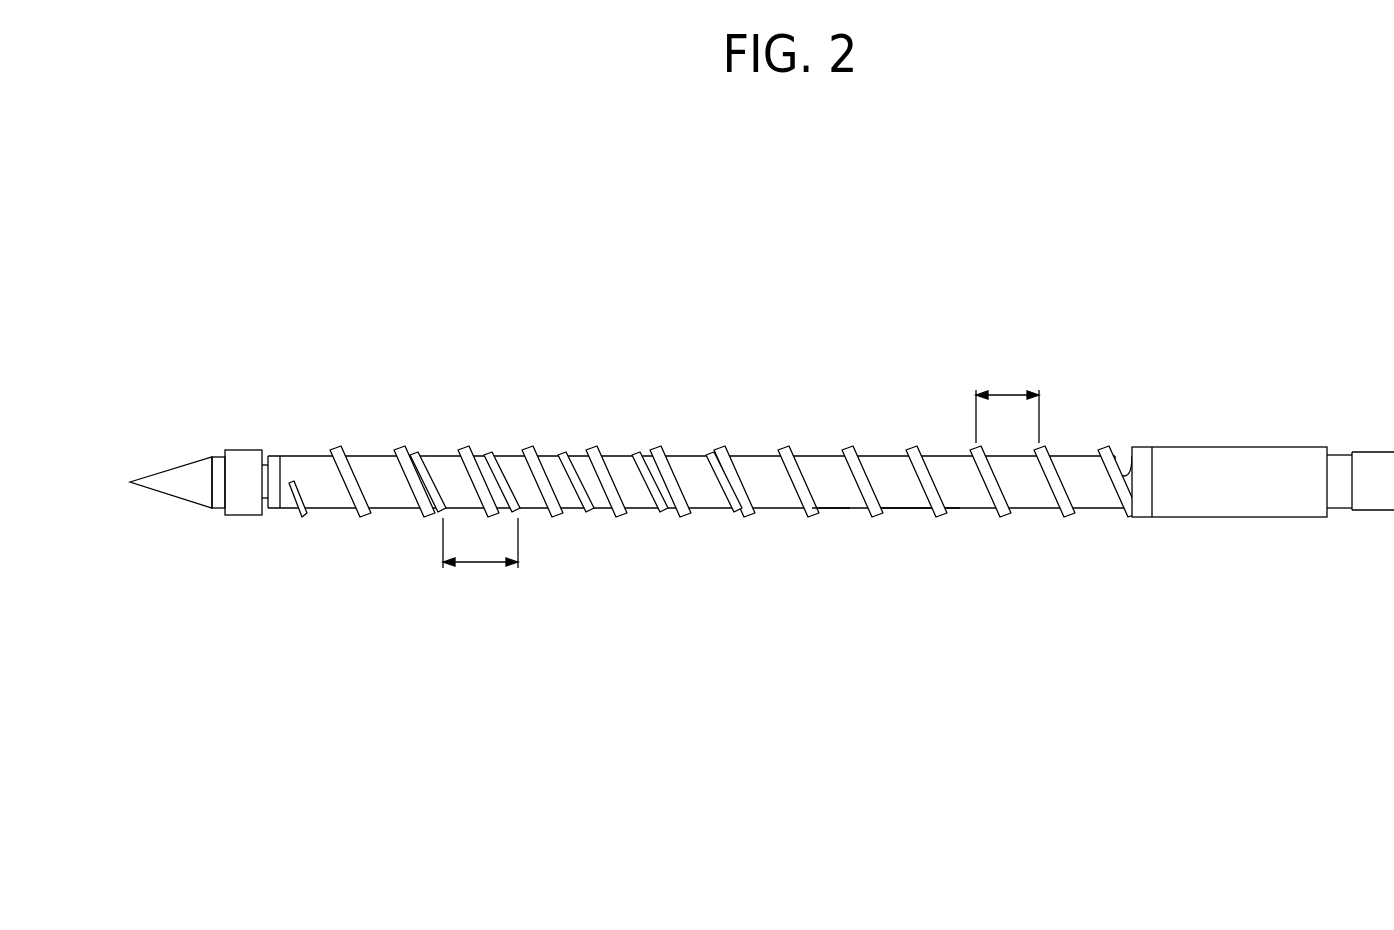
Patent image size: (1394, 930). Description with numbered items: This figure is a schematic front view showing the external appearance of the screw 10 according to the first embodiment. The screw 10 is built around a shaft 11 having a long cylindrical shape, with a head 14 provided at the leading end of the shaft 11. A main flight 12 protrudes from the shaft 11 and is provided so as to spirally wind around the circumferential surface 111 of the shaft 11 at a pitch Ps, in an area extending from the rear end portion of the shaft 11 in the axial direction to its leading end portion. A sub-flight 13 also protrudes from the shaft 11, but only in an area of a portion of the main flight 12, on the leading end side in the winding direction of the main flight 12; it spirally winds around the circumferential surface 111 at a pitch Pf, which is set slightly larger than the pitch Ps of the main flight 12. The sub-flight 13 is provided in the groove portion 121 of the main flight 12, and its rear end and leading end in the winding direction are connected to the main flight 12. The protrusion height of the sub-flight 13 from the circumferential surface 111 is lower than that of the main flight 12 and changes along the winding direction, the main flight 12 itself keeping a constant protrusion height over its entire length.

The screw 10 is at (1000, 289).
The shaft 11 is at (1067, 453).
The circumferential surface 111 is at (910, 510).
The main flight 12 is at (1007, 516).
The groove portion 121 is at (843, 497).
The sub-flight 13 is at (667, 516).
The head 14 is at (173, 461).
The pitch Ps is at (1007, 403).
The pitch Pf is at (480, 558).